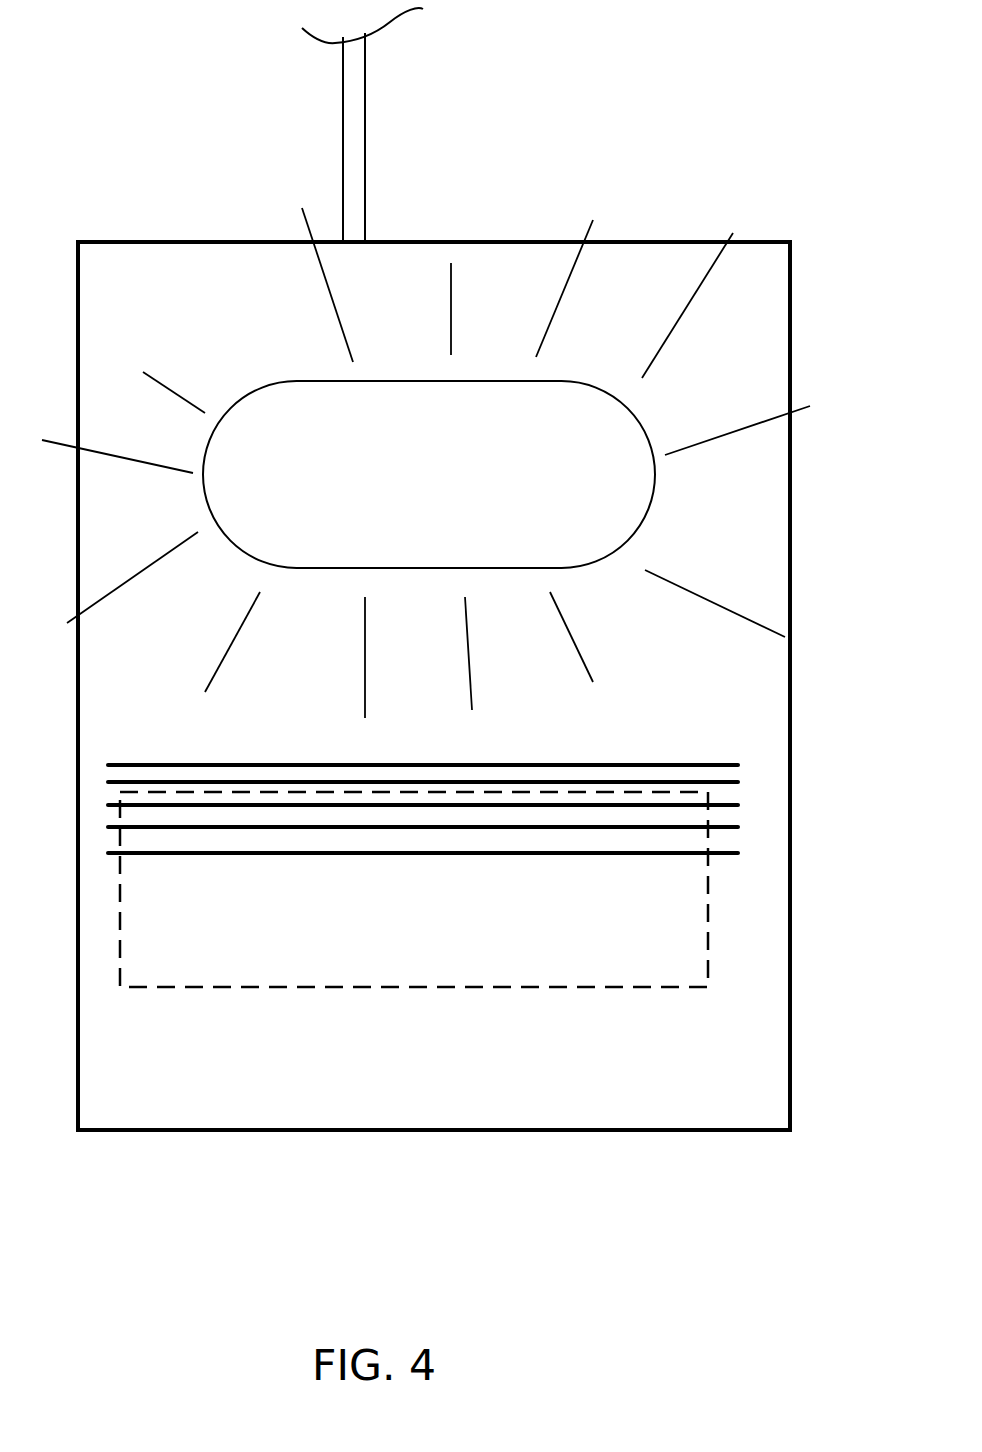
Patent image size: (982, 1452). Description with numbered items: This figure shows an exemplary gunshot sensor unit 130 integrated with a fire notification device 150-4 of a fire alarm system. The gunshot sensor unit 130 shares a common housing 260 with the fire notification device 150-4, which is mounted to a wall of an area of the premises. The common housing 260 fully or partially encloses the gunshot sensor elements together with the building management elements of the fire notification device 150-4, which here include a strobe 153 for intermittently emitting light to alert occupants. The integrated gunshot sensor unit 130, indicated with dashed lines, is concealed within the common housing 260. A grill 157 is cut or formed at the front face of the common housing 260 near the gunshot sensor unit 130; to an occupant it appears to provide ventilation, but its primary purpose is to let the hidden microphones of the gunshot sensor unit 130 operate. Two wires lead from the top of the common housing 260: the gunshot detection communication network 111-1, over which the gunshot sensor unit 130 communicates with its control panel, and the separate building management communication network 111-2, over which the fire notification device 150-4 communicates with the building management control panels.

The fire notification device 150-4 is at (717, 197).
The common housing 260 is at (170, 242).
The gunshot detection communication network 111-1 is at (343, 150).
The building management communication network 111-2 is at (365, 145).
The strobe 153 is at (297, 380).
The grill 157 is at (318, 765).
The gunshot sensor unit 130 is at (540, 980).